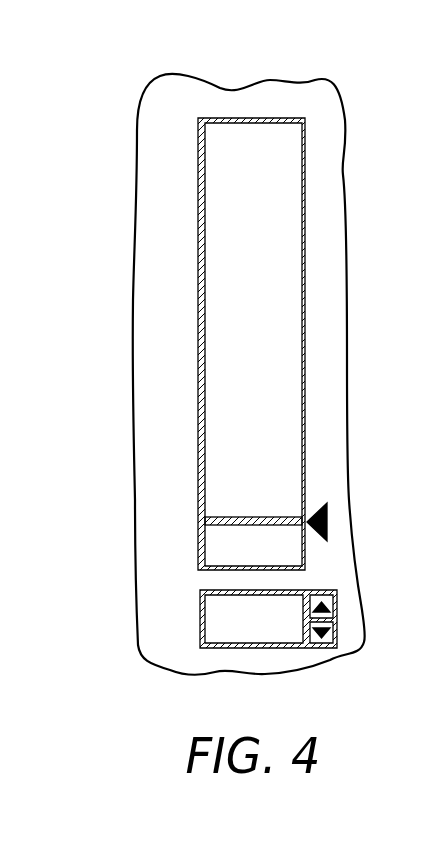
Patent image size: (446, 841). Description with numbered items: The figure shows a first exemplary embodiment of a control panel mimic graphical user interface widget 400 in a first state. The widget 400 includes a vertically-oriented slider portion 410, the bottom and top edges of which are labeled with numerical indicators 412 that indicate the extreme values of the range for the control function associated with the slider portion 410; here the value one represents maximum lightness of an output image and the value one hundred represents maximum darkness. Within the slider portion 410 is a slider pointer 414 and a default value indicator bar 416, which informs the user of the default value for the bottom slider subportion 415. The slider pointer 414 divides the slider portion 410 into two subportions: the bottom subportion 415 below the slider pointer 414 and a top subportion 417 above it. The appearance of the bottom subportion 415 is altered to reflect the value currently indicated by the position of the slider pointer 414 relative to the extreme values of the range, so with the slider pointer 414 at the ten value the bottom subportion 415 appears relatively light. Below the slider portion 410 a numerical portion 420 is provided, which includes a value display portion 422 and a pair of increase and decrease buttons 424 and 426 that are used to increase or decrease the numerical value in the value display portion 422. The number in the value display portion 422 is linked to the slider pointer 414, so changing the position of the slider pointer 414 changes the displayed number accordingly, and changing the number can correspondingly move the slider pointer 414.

The control panel mimic graphical user interface widget 400 is at (208, 54).
The slider portion 410 is at (176, 191).
The numerical indicators 412 is at (150, 104).
The slider pointer 414 is at (330, 522).
The bottom slider subportion 415 is at (225, 539).
The default value indicator bar 416 is at (229, 518).
The top subportion 417 is at (226, 416).
The numerical portion 420 is at (178, 617).
The value display portion 422 is at (209, 645).
The increase button 424 is at (334, 591).
The decrease button 426 is at (328, 643).